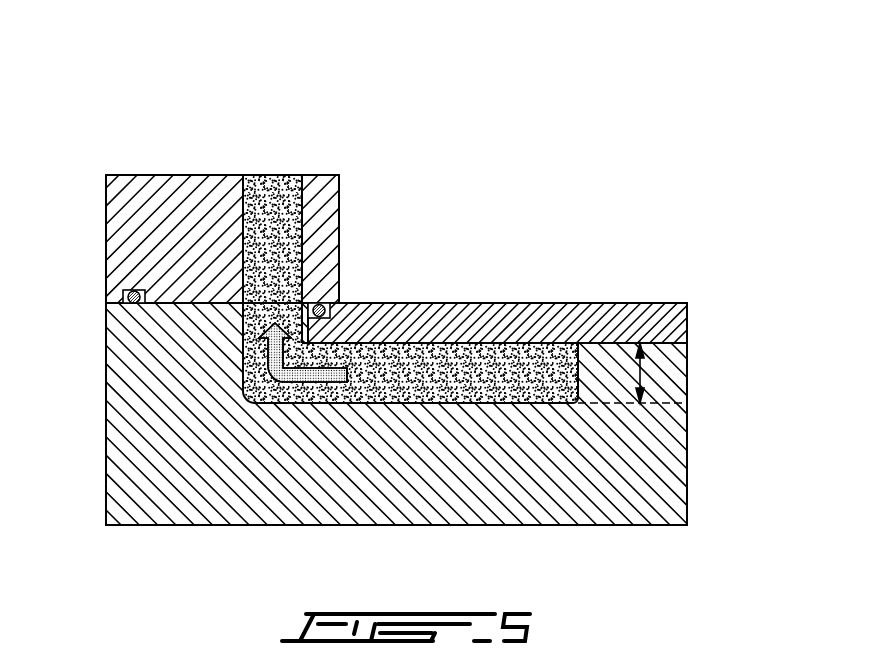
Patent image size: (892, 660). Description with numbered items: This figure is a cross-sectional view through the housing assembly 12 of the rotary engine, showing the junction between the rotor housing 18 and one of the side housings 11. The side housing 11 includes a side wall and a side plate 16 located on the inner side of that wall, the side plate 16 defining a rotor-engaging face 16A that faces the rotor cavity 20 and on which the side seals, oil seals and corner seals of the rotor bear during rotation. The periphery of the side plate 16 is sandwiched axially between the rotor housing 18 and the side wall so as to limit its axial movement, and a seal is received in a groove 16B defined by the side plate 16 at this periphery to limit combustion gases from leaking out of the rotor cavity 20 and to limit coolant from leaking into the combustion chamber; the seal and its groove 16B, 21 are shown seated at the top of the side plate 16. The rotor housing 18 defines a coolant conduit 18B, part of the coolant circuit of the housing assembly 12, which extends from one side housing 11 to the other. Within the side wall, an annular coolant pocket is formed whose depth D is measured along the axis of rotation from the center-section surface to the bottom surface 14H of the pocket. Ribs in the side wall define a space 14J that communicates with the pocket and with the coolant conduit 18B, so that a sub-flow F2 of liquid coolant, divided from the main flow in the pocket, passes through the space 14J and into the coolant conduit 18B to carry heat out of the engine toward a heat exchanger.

The side housing 11 is at (740, 303).
The housing assembly 12 is at (427, 311).
The bottom surface of the pocket 14H is at (438, 403).
The space between ribs 14J is at (243, 326).
The side plate 16 is at (634, 303).
The rotor-engaging face 16A is at (400, 303).
The groove 16B is at (386, 269).
The seal 21 is at (322, 303).
The rotor housing 18 is at (162, 175).
The coolant conduit 18B is at (303, 212).
The rotor cavity 20 is at (524, 235).
The sub-flow F2 is at (282, 380).
The depth of the pocket D is at (645, 373).